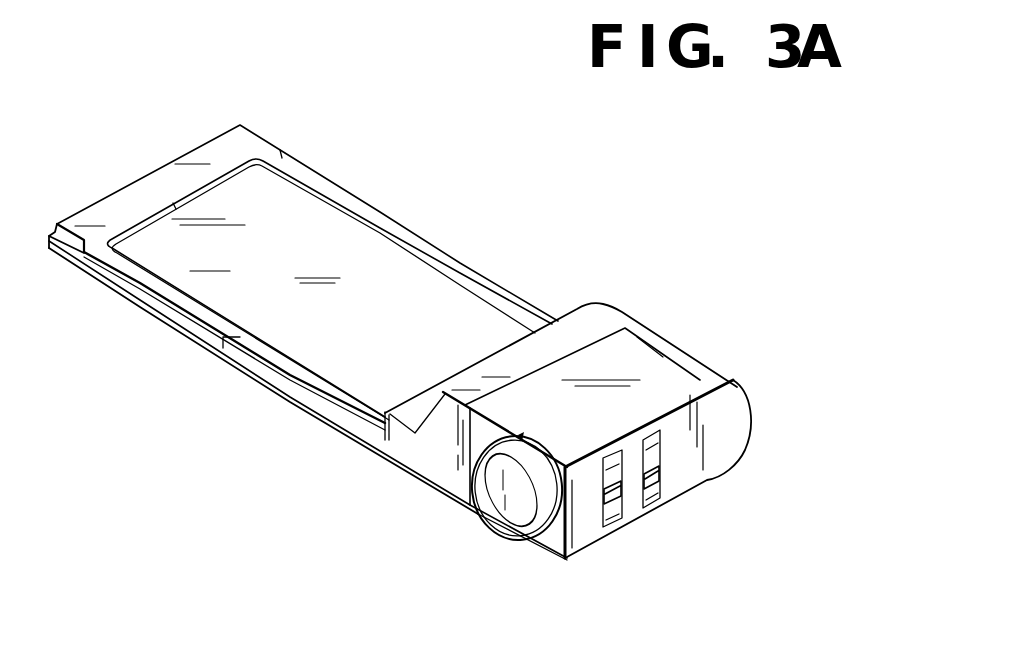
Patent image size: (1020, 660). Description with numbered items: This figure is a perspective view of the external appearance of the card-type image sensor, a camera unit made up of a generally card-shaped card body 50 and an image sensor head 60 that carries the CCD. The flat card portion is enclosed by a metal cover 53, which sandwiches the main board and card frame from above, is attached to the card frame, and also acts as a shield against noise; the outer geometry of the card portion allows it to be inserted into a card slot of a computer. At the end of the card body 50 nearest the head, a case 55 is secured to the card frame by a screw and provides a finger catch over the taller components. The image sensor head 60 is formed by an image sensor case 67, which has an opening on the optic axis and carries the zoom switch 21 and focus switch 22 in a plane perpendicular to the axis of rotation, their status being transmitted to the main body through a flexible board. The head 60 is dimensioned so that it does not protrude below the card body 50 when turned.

The card body 50 is at (495, 208).
The cover 53 is at (302, 345).
The case 55 is at (432, 452).
The image sensor head 60 is at (684, 305).
The image sensor case 67 is at (697, 366).
The zoom switch 21 is at (617, 512).
The focus switch 22 is at (657, 488).